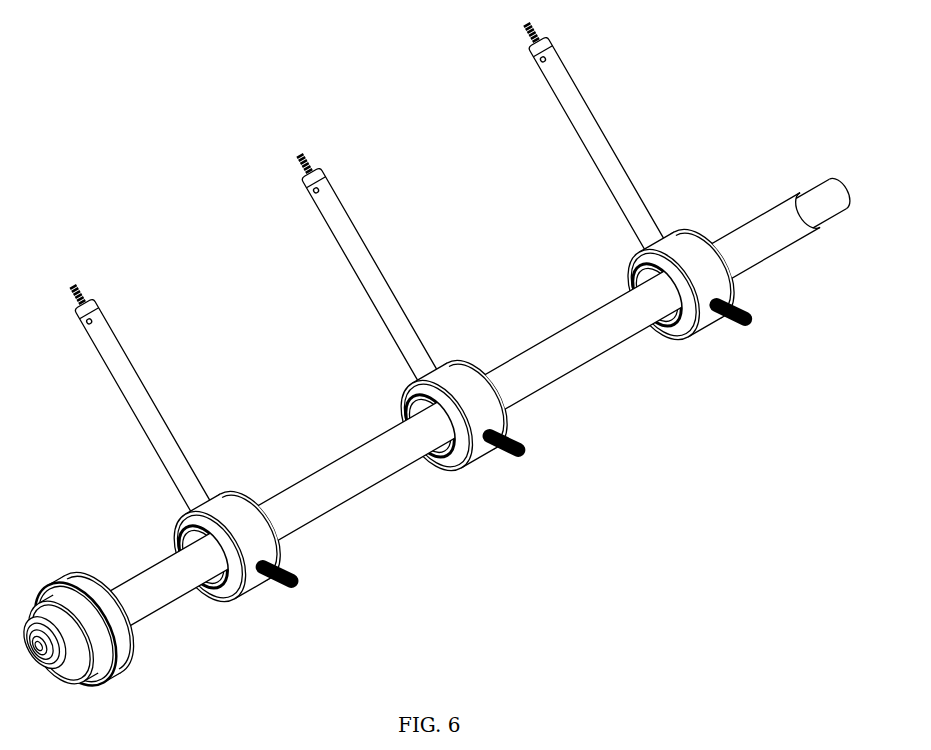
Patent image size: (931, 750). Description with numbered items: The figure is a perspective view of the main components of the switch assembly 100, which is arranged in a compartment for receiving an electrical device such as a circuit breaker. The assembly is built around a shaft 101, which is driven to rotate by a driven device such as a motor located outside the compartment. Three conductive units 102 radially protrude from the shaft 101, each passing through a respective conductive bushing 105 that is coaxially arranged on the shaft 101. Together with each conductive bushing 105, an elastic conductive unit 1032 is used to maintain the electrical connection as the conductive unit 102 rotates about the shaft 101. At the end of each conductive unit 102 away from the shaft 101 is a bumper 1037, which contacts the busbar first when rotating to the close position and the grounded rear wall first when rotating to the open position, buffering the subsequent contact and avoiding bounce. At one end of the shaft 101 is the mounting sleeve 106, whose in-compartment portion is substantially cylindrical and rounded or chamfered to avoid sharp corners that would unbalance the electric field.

The switch assembly 100 is at (258, 120).
The shaft 101 is at (337, 469).
The conductive unit 102 is at (128, 362).
The conductive bushing 105 is at (253, 506).
The mounting sleeve 106 is at (82, 586).
The elastic conductive unit 1032 is at (293, 570).
The bumper 1037 is at (83, 290).